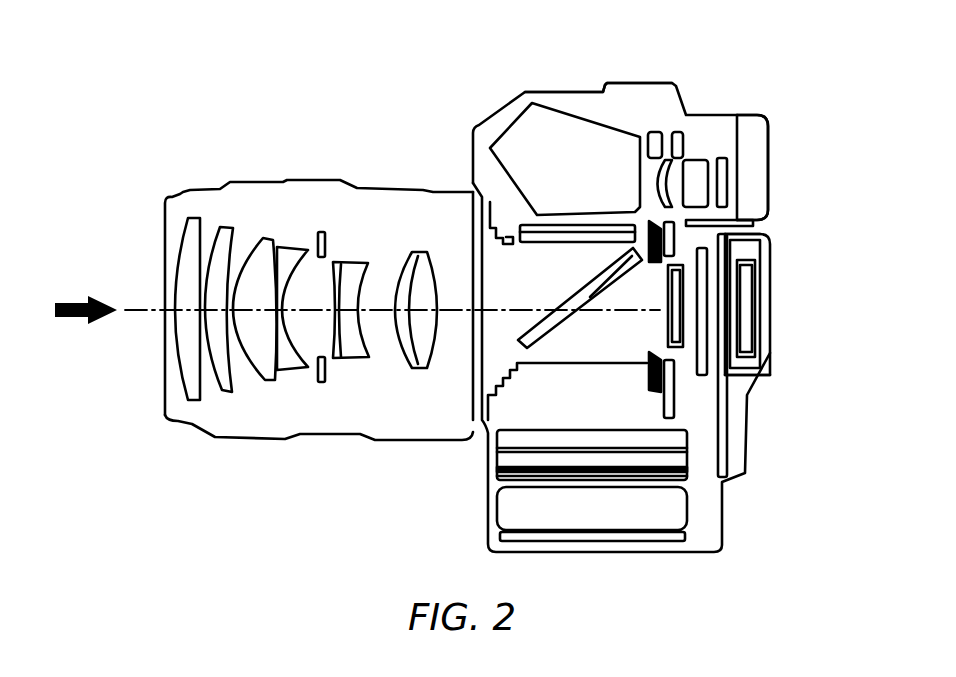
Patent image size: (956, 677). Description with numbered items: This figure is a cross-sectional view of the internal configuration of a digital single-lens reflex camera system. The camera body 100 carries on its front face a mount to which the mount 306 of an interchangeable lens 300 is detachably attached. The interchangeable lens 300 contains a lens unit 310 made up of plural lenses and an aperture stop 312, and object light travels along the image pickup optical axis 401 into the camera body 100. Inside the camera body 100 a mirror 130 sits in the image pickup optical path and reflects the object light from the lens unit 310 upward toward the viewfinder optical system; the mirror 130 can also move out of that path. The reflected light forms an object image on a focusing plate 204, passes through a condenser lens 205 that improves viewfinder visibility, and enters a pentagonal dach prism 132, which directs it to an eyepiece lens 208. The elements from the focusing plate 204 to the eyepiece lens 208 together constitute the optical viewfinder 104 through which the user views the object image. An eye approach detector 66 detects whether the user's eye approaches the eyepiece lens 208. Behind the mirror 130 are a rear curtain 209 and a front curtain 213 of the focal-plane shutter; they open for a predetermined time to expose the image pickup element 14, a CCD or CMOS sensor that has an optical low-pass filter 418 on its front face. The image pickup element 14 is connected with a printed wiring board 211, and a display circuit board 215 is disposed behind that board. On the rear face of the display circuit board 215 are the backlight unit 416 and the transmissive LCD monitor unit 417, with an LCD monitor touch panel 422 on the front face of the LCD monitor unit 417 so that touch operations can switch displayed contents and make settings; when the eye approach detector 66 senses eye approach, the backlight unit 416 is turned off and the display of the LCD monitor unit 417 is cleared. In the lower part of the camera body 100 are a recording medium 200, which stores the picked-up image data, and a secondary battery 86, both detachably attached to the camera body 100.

The camera body 100 is at (668, 107).
The pentagonal dach prism 132 is at (580, 118).
The interchangeable lens 300 is at (313, 200).
The mount 306 is at (472, 396).
The lens unit 310 is at (190, 380).
The image pickup optical axis 401 is at (300, 357).
The aperture stop 312 is at (322, 383).
The mirror 130 is at (523, 327).
The focusing plate 204 is at (540, 236).
The condenser lens 205 is at (572, 222).
The eyepiece lens 208 is at (737, 160).
The optical viewfinder 104 is at (753, 167).
The rear curtain 209 is at (725, 226).
The image pickup element 14 is at (745, 224).
The eye approach detector 66 is at (760, 234).
The LCD monitor unit 417 is at (765, 327).
The LCD monitor touch panel 422 is at (768, 280).
The backlight unit 416 is at (742, 302).
The display circuit board 215 is at (703, 278).
The printed wiring board 211 is at (677, 342).
The optical low-pass filter 418 is at (742, 372).
The front curtain 213 is at (742, 418).
The recording medium 200 is at (675, 438).
The secondary battery 86 is at (668, 508).